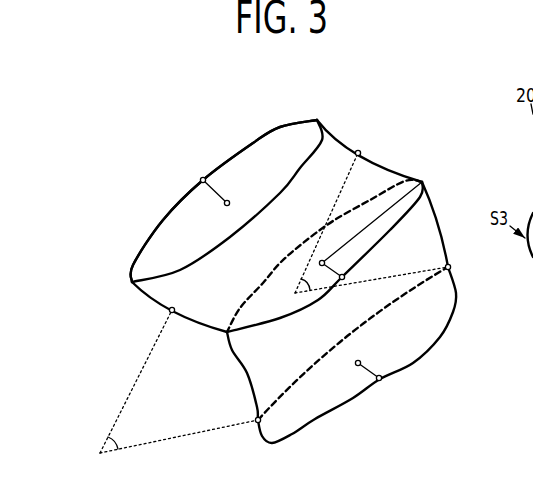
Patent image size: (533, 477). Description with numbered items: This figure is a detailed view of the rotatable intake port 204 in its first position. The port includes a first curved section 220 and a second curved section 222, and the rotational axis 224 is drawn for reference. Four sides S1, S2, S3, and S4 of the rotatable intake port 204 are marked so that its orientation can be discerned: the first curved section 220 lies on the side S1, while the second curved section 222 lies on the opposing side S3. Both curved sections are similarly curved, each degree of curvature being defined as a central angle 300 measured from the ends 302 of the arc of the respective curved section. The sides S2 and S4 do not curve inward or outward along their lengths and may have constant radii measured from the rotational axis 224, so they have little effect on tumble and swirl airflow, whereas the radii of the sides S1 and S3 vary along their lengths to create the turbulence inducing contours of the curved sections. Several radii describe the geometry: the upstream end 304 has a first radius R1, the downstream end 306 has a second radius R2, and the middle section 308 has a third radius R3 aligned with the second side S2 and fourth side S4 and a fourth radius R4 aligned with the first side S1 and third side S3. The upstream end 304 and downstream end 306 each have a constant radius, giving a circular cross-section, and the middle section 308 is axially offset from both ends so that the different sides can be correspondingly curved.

The rotatable intake port 204 is at (104, 199).
The first curved section 220 is at (262, 375).
The second curved section 222 is at (429, 208).
The rotational axis 224 is at (315, 304).
The central angle 300 is at (308, 289).
The ends 302 is at (358, 152).
The upstream end 304 is at (187, 226).
The downstream end 306 is at (386, 384).
The middle section 308 is at (273, 295).
The first side S1 is at (148, 302).
The second side S2 is at (263, 230).
The third side S3 is at (347, 120).
The fourth side S4 is at (200, 171).
The first radius R1 is at (204, 178).
The second radius R2 is at (379, 377).
The third radius R3 is at (344, 277).
The fourth radius R4 is at (377, 217).